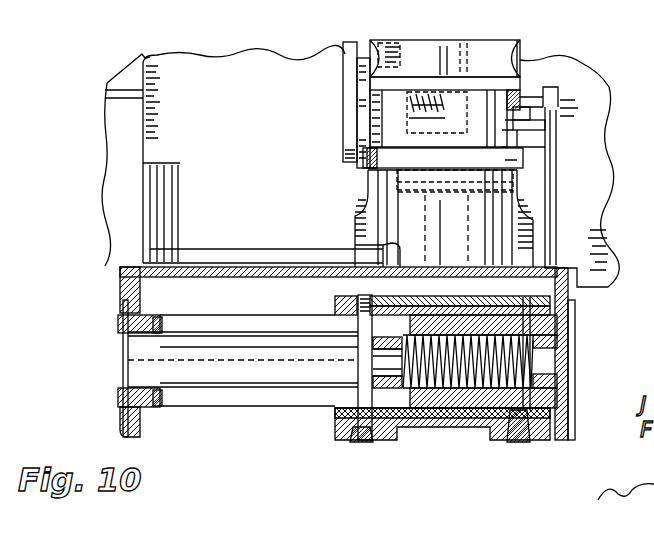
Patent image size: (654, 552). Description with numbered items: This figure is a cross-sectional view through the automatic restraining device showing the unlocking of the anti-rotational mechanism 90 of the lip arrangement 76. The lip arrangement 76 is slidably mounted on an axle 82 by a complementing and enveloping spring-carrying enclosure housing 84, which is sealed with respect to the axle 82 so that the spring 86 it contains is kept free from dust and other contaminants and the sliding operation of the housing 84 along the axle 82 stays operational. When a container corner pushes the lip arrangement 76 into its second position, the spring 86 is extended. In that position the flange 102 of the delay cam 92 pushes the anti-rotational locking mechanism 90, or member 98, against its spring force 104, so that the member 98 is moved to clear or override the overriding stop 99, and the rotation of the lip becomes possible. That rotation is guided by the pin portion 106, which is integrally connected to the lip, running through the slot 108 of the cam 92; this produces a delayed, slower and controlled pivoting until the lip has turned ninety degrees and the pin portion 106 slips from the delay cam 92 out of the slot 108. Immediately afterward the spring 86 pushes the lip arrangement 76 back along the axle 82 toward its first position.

The lip arrangement 76 is at (362, 203).
The axle 82 is at (227, 372).
The spring-carrying enclosure housing 84 is at (470, 440).
The spring 86 is at (528, 374).
The anti-rotational mechanism 90 is at (402, 94).
The delay cam 92 is at (557, 97).
The member 98 is at (343, 128).
The overriding stop 99 is at (362, 168).
The flange 102 is at (517, 137).
The spring force 104 is at (438, 90).
The pin portion 106 is at (529, 105).
The slot 108 is at (541, 95).